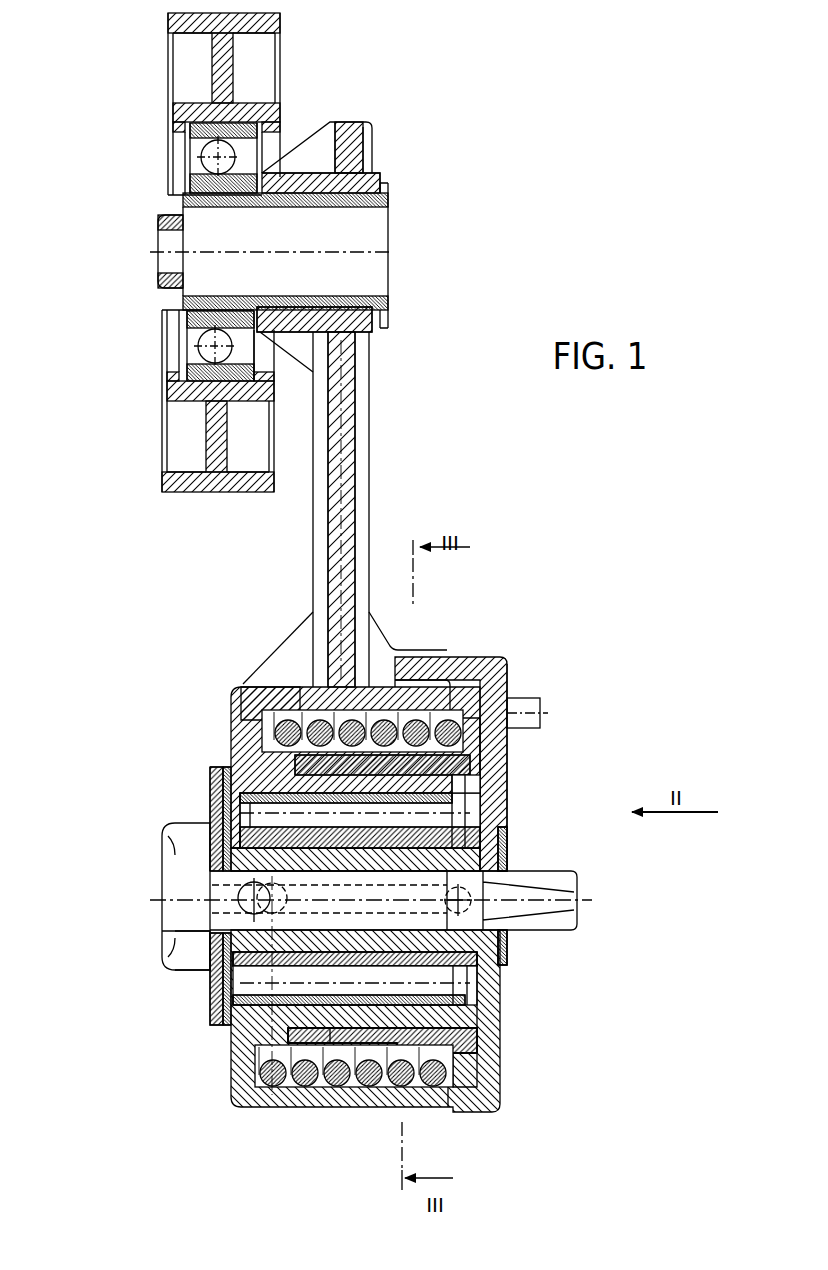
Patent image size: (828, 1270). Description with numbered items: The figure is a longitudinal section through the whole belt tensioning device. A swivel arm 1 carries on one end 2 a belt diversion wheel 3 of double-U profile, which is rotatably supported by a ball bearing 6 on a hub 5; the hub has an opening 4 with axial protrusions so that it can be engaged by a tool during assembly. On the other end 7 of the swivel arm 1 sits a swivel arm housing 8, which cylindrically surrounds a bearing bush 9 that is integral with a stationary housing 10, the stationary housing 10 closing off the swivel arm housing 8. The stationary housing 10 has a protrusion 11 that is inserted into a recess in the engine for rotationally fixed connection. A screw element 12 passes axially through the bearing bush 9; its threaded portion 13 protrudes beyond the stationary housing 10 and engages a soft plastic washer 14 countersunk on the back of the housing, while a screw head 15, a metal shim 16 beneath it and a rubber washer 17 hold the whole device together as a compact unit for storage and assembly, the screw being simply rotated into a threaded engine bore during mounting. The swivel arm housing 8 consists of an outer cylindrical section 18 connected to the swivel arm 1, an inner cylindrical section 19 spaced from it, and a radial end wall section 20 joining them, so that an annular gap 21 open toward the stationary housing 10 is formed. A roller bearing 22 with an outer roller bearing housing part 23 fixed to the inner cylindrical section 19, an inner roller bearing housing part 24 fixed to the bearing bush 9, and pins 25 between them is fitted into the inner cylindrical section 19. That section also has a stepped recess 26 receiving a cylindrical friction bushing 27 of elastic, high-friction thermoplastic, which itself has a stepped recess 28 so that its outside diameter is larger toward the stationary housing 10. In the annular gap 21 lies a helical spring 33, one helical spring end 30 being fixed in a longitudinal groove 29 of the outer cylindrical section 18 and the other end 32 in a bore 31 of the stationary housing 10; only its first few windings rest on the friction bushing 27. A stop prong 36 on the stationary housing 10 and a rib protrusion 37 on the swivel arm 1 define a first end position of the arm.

The swivel arm 1 is at (370, 473).
The end of swivel arm 2 is at (369, 348).
The belt diversion wheel 3 is at (280, 97).
The opening 4 is at (204, 236).
The hub 5 is at (355, 200).
The ball bearing 6 is at (205, 156).
The other end of swivel arm 7 is at (310, 650).
The swivel arm housing 8 is at (231, 708).
The bearing bush 9 is at (228, 845).
The stationary housing 10 is at (507, 757).
The protrusion 11 is at (532, 720).
The screw element 12 is at (160, 908).
The threaded portion 13 is at (556, 876).
The plastic washer 14 is at (507, 832).
The screw head 15 is at (180, 947).
The metal shim 16 is at (215, 993).
The rubber washer 17 is at (220, 1026).
The outer cylindrical section 18 is at (275, 698).
The inner cylindrical section 19 is at (300, 782).
The end wall section 20 is at (247, 722).
The annular gap 21 is at (303, 712).
The roller bearing 22 is at (478, 803).
The outer roller bearing housing part 23 is at (470, 1006).
The inner roller bearing housing part 24 is at (492, 960).
The pins 25 is at (470, 988).
The stepped recess 26 is at (290, 1030).
The friction bushing 27 is at (465, 1062).
The stepped recess of friction bushing 28 is at (385, 1088).
The longitudinal groove 29 is at (240, 896).
The helical spring end 30 is at (268, 892).
The bore 31 is at (468, 896).
The spring end 32 is at (458, 906).
The helical spring 33 is at (307, 1088).
The stop prong 36 is at (427, 670).
The rib protrusion 37 is at (373, 653).